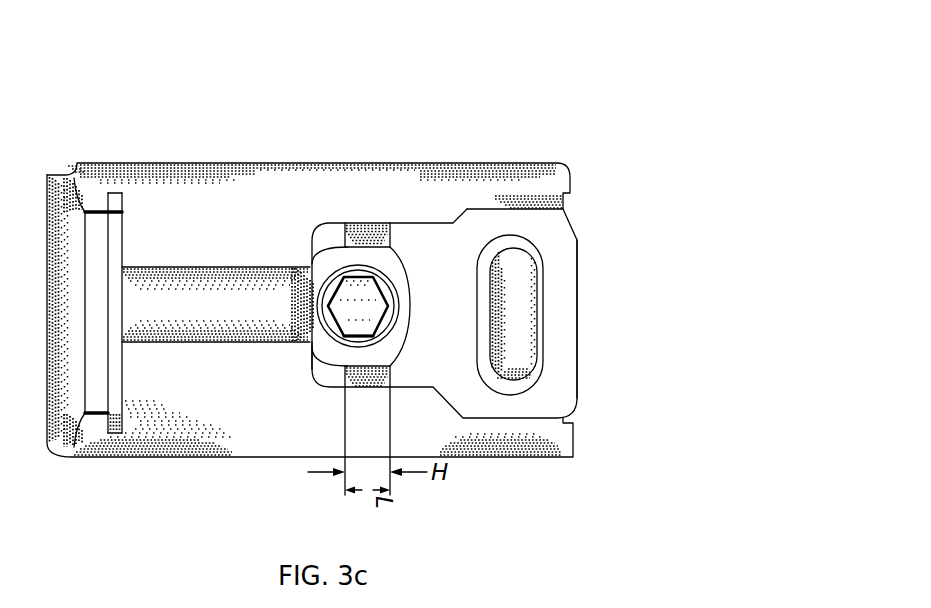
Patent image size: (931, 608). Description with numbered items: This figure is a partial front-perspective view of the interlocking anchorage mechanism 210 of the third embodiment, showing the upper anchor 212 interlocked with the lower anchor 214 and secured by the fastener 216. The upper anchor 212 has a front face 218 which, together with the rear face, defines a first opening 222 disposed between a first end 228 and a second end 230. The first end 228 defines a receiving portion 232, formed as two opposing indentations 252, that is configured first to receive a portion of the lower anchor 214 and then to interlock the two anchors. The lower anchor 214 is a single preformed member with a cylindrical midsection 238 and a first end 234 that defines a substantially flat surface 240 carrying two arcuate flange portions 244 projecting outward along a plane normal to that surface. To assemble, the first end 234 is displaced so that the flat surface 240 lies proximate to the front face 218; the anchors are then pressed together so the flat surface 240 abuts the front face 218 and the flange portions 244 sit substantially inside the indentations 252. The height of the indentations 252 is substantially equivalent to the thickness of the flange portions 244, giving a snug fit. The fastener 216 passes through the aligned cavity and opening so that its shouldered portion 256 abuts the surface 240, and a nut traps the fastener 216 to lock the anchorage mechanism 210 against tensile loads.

The interlocking anchorage mechanism 210 is at (596, 108).
The upper anchor 212 is at (478, 108).
The lower anchor 214 is at (166, 428).
The fastener 216 is at (357, 297).
The front face 218 is at (557, 307).
The first opening 222 is at (522, 300).
The first end 228 is at (300, 368).
The second end 230 is at (586, 367).
The receiving portion 232 is at (361, 175).
The first end 234 is at (455, 310).
The cylindrical midsection 238 is at (178, 240).
The flat surface 240 is at (313, 267).
The arcuate flange portions 244 is at (382, 238).
The indentations 252 is at (356, 224).
The shouldered portion 256 is at (360, 340).